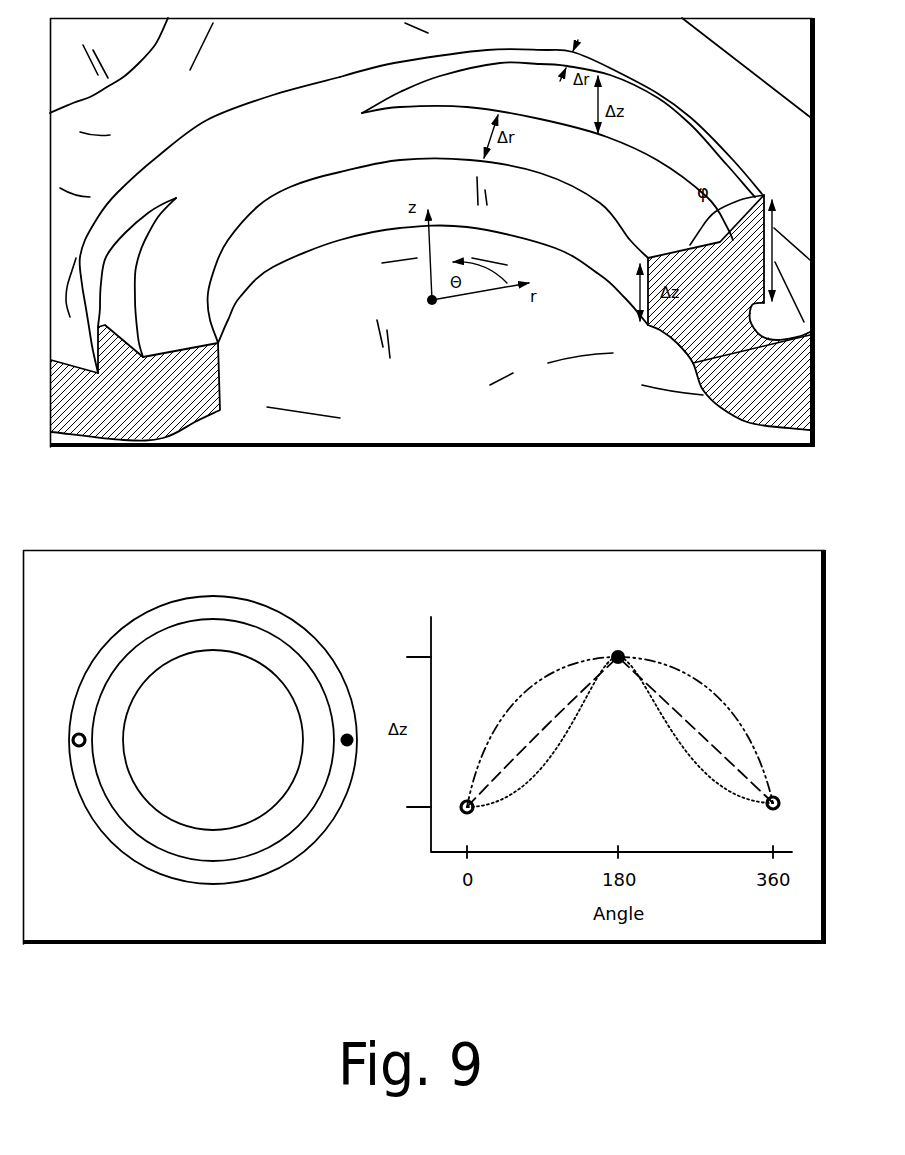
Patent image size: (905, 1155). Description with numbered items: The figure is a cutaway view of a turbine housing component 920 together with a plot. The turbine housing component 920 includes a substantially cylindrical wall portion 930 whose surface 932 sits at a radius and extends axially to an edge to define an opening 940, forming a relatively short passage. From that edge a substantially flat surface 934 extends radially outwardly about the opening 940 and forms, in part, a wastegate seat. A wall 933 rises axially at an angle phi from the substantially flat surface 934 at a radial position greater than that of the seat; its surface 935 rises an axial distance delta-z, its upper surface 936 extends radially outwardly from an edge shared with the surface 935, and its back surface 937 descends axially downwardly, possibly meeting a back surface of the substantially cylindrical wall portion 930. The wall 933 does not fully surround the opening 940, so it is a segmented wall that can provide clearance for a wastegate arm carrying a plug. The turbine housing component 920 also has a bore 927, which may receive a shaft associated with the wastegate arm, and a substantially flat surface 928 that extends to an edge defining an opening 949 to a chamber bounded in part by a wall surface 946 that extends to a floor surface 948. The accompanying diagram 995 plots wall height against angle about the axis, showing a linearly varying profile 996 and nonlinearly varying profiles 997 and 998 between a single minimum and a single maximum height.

The turbine housing component 920 is at (787, 398).
The bore 927 is at (140, 47).
The substantially flat surface 928 is at (798, 57).
The substantially cylindrical wall portion 930 is at (189, 392).
The surface 932 is at (324, 234).
The wall 933 is at (382, 51).
The substantially flat surface 934 is at (289, 150).
The surface 935 is at (665, 145).
The upper surface 936 is at (658, 98).
The back surface 937 is at (765, 195).
The opening 940 is at (628, 230).
The wall surface 946 is at (644, 55).
The floor surface 948 is at (695, 365).
The opening 949 is at (770, 85).
The diagram 995 is at (87, 590).
The profile 996 is at (538, 737).
The profile 997 is at (542, 687).
The profile 998 is at (580, 717).